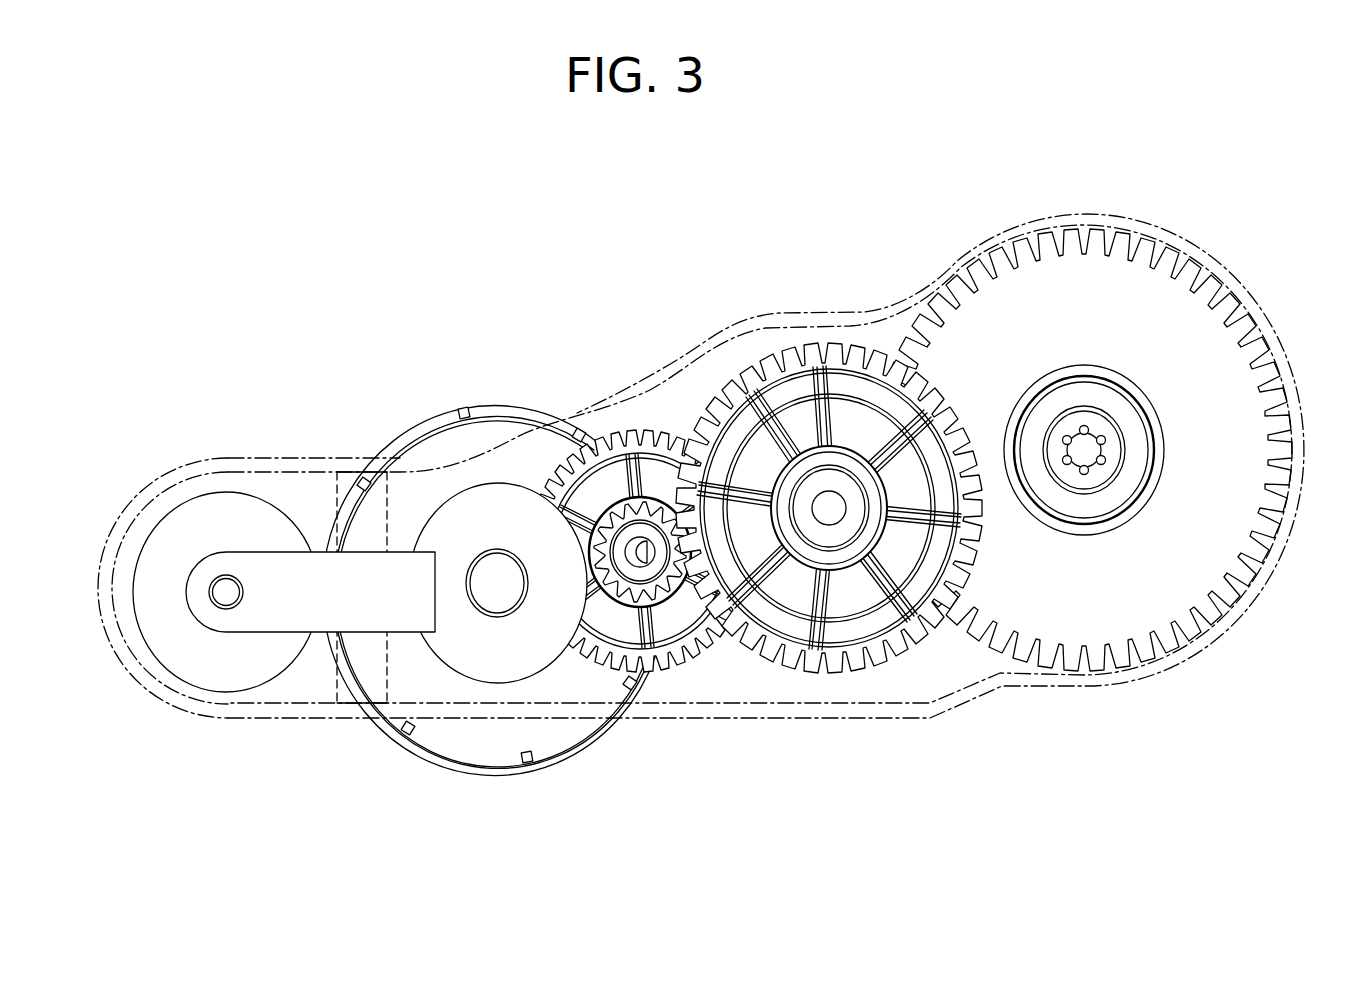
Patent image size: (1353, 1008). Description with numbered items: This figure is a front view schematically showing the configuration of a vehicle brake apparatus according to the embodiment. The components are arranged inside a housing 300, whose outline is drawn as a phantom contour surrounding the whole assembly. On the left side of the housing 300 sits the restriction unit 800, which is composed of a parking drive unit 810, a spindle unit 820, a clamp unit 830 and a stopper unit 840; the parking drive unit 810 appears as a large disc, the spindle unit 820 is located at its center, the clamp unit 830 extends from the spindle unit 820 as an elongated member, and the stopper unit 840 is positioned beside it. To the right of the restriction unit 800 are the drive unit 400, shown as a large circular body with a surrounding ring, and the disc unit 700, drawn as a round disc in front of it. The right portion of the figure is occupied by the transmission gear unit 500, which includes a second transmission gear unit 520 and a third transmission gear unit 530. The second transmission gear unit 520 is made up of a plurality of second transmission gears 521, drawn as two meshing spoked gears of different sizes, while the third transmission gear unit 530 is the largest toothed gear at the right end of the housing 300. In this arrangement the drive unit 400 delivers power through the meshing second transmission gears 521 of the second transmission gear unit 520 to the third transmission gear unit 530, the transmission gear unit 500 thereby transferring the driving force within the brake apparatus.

The housing 300 is at (242, 457).
The drive unit 400 is at (443, 445).
The transmission gear unit 500 is at (910, 551).
The second transmission gear unit 520 is at (755, 588).
The second transmission gear 521 is at (640, 650).
The third transmission gear unit 530 is at (1068, 636).
The disc unit 700 is at (508, 643).
The restriction unit 800 is at (270, 655).
The parking drive unit 810 is at (180, 645).
The spindle unit 820 is at (223, 600).
The clamp unit 830 is at (296, 600).
The stopper unit 840 is at (334, 672).